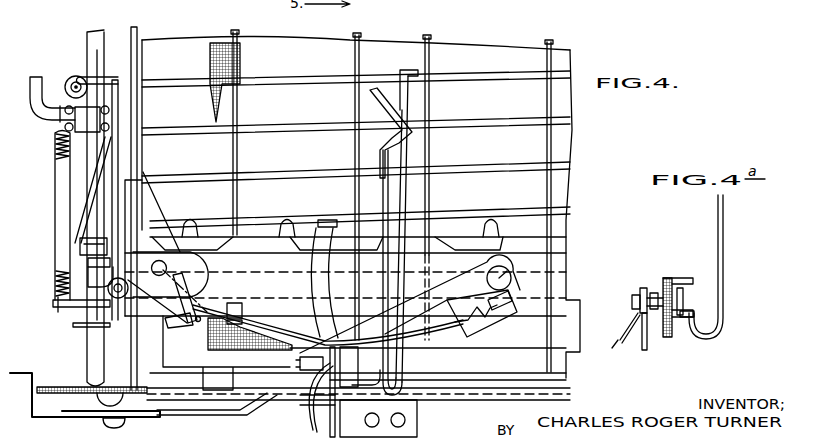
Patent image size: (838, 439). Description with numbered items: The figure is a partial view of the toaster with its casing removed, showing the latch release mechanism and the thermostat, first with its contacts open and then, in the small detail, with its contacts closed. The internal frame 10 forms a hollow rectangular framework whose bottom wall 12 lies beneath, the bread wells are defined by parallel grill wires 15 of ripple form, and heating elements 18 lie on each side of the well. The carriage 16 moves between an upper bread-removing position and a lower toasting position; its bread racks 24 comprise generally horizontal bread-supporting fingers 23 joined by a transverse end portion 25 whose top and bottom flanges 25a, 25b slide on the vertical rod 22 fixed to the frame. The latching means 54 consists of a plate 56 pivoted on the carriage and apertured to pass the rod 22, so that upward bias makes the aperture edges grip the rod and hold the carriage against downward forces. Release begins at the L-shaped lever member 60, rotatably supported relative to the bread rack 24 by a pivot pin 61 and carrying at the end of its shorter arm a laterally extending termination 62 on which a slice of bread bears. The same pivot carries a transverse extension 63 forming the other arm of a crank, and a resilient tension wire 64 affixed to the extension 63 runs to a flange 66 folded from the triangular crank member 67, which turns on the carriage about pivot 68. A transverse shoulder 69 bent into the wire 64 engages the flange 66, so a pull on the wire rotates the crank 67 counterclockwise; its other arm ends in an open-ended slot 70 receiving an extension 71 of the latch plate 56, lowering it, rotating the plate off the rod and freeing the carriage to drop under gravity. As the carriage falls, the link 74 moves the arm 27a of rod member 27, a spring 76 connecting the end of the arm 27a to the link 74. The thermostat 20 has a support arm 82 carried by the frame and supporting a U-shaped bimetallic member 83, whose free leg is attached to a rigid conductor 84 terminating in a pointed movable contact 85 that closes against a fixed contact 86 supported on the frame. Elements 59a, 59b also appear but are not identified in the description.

In FIG. 4, the internal frame 10 is at (125, 38).
In FIG. 4, the bottom wall 12 is at (488, 405).
In FIG. 4, the grill wires 15 is at (238, 80).
In FIG. 4, the carriage 16 is at (487, 223).
In FIG. 4, the heating elements 18 is at (480, 72).
In FIG. 4, the thermostatic switch element 20 is at (400, 78).
In FIG. 4, the rod 22 is at (97, 40).
In FIG. 4, the bread-supporting fingers 23 is at (190, 218).
In FIG. 4, the bread racks 24 is at (553, 267).
In FIG. 4, the transverse end portion 25 is at (118, 80).
In FIG. 4, the flange 25a is at (82, 78).
In FIG. 4, the flange 25b is at (88, 310).
In FIG. 4, the rod member 27 is at (40, 115).
In FIG. 4, the arm 27a is at (30, 77).
In FIG. 4, the latching means 54 is at (80, 238).
In FIG. 4, the plate 56 is at (92, 244).
In FIG. 4, the roller 59a is at (72, 86).
In FIG. 4, the roller 59b is at (120, 315).
In FIG. 4, the L-shaped lever member 60 is at (360, 316).
In FIG. 4, the pivot pin 61 is at (511, 276).
In FIG. 4, the laterally extending termination 62 is at (327, 220).
In FIG. 4, the transverse extension 63 is at (510, 318).
In FIG. 4, the resilient tension wire 64 is at (428, 338).
In FIG. 4, the flange 66 is at (195, 292).
In FIG. 4, the triangular crank member 67 is at (140, 262).
In FIG. 4, the pivot 68 is at (167, 268).
In FIG. 4, the transverse shoulder 69 is at (199, 330).
In FIG. 4, the open-ended slot 70 is at (95, 275).
In FIG. 4, the extension 71 is at (95, 262).
In FIG. 4, the link 74 is at (90, 170).
In FIG. 4, the spring 76 is at (57, 175).
In FIG. 4, the support arm 82 is at (386, 205).
In FIG. 4, the U-shaped bimetallic member 83 is at (413, 103).
In FIG. 4, the rigid conductor 84 is at (402, 210).
In FIG. 4a, the rigid conductor 84 is at (722, 263).
In FIG. 4, the pointed movable contact 85 is at (366, 373).
In FIG. 4a, the pointed movable contact 85 is at (688, 324).
In FIG. 4, the fixed contact 86 is at (358, 388).
In FIG. 4a, the fixed contact 86 is at (677, 278).